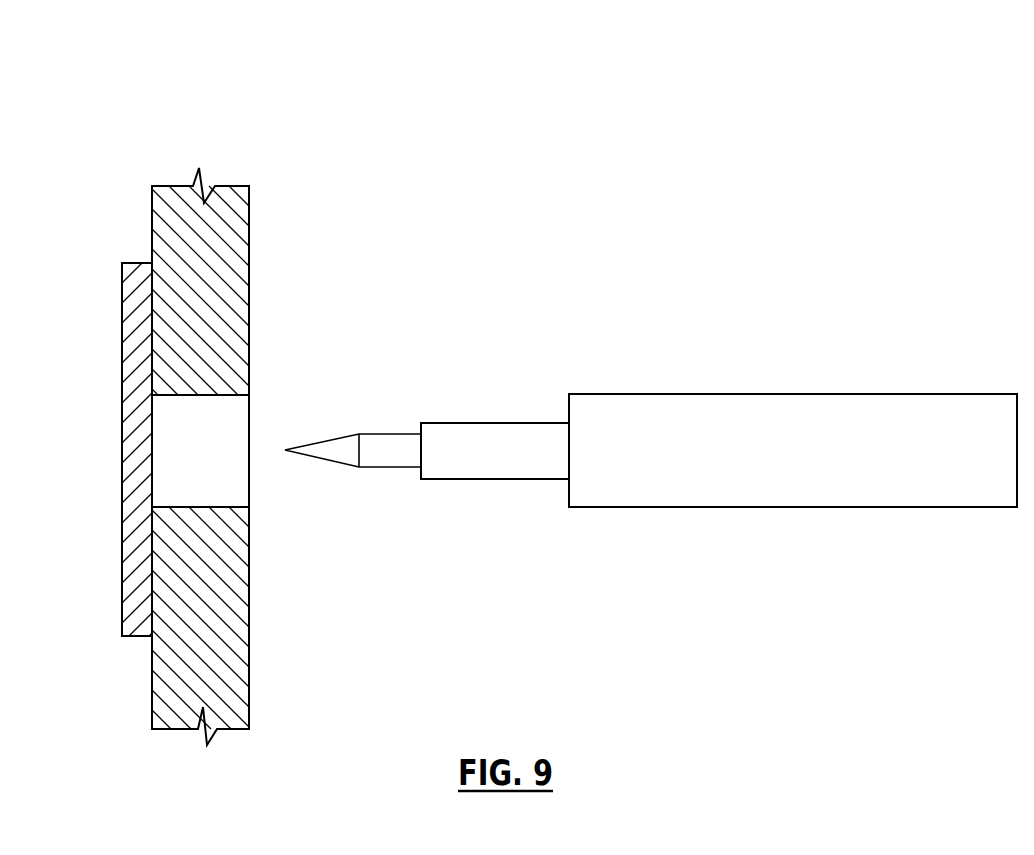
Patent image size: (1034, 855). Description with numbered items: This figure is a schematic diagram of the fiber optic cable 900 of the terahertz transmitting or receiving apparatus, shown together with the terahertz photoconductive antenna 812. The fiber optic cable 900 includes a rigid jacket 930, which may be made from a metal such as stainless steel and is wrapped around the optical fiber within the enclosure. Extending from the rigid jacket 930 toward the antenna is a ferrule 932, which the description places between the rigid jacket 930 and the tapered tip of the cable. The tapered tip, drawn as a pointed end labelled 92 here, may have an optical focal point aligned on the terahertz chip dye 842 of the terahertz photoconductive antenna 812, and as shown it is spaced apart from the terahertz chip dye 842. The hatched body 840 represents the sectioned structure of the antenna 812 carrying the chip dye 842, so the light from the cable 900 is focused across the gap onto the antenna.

The terahertz photoconductive antenna 812 is at (170, 152).
The substrate block 840 is at (213, 245).
The terahertz chip dye 842 is at (128, 319).
The fiber optic cable 900 is at (738, 258).
The rigid jacket 930 is at (738, 468).
The ferrule 932 is at (509, 460).
The probe tip 92 is at (340, 450).